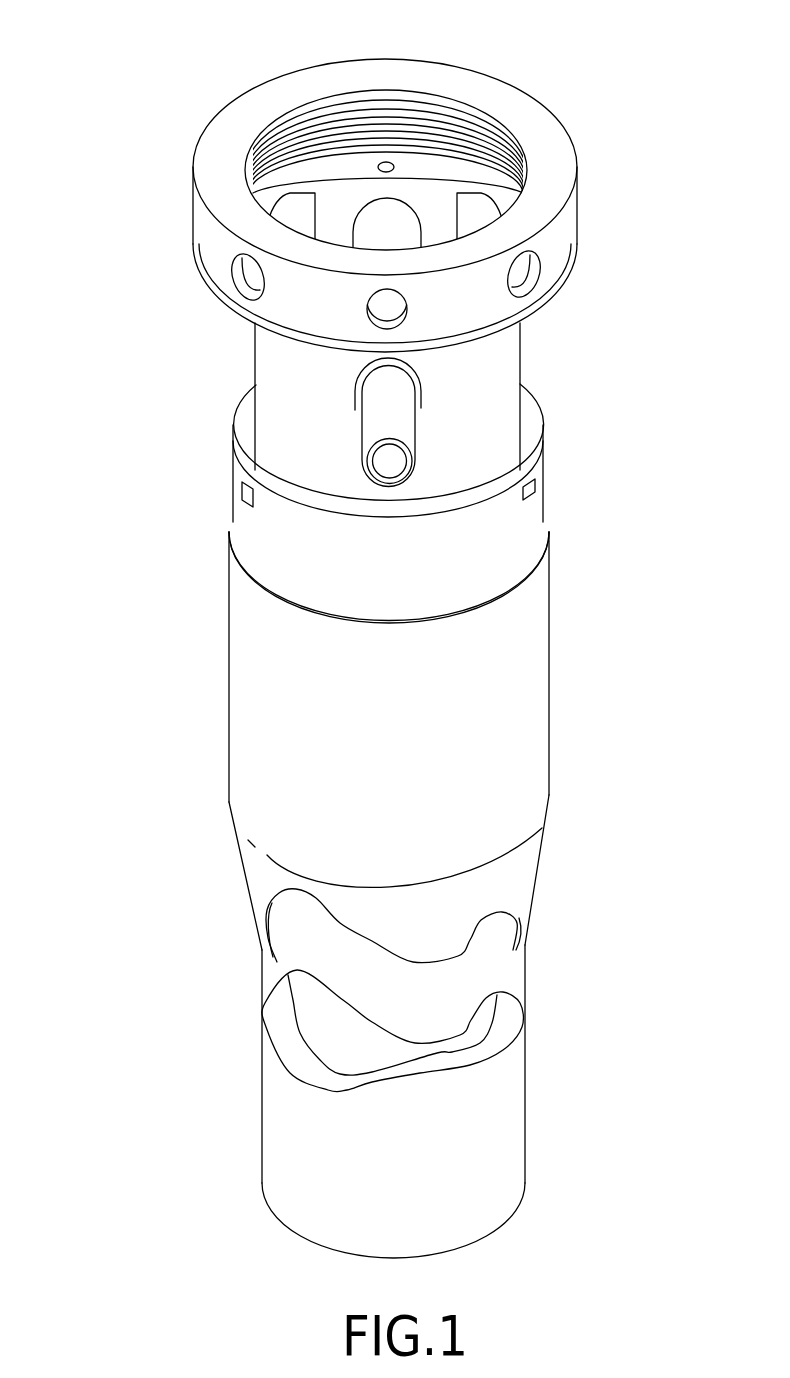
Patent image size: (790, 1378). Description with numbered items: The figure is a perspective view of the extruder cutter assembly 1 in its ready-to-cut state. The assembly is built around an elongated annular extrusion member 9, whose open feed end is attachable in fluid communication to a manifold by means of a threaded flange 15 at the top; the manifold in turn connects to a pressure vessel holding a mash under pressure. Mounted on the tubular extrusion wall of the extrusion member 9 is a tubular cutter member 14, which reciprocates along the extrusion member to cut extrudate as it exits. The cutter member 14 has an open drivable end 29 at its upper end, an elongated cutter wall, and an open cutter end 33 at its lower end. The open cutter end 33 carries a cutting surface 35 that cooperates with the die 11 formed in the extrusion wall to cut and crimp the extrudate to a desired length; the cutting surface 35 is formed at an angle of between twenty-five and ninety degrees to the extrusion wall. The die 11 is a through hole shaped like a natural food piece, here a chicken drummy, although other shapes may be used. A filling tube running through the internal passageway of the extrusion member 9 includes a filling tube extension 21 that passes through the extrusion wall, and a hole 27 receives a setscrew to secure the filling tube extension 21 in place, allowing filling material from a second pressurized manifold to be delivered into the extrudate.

The extruder cutter assembly 1 is at (160, 321).
The threaded flange 15 is at (562, 234).
The hole 27 is at (394, 165).
The annular extrusion member 9 is at (480, 410).
The filling tube extension 21 is at (382, 420).
The open drivable end 29 is at (515, 470).
The tubular cutter member 14 is at (498, 763).
The open cutter end 33 is at (243, 870).
The cutting surface 35 is at (443, 960).
The die 11 is at (313, 1023).